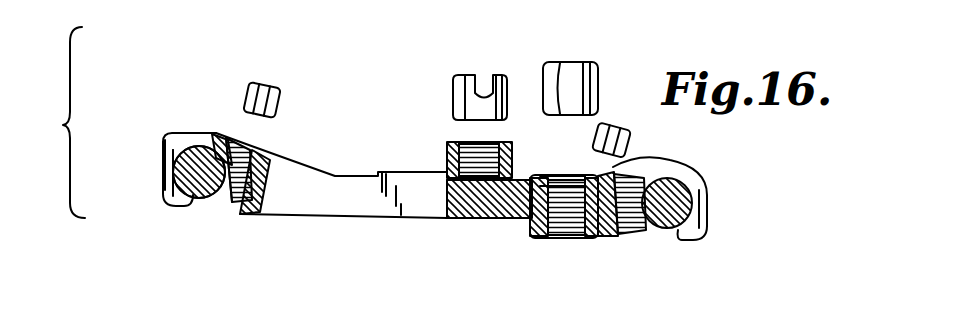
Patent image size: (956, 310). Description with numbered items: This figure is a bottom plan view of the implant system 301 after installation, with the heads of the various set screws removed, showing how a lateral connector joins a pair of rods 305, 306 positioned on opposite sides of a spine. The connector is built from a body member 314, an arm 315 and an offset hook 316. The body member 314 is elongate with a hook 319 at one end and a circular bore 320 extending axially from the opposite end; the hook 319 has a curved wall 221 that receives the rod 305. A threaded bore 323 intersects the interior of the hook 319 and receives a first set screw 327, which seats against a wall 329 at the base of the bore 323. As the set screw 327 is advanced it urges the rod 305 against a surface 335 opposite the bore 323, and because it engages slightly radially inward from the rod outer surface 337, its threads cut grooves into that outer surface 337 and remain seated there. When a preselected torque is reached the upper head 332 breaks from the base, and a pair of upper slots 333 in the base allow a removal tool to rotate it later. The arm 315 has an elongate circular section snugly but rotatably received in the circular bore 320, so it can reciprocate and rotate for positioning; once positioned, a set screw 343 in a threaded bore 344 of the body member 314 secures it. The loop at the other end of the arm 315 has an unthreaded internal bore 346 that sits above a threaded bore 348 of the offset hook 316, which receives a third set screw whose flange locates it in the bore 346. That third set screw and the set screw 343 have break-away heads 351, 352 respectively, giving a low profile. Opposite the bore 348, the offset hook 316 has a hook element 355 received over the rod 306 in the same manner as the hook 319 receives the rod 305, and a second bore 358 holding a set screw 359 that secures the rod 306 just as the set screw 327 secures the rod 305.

The implant system 301 is at (147, 98).
The rod 305 is at (189, 208).
The rod 306 is at (688, 190).
The body member 314 is at (296, 160).
The arm 315 is at (527, 197).
The offset hook 316 is at (704, 226).
The hook 319 is at (161, 170).
The circular bore 320 is at (452, 203).
The curved wall 221 is at (188, 183).
The bore 323 is at (262, 186).
The first set screw 327 is at (247, 150).
The wall 329 is at (232, 200).
The upper head 332 is at (263, 83).
The upper slots 333 is at (225, 133).
The surface 335 is at (194, 155).
The outer surface 337 is at (212, 133).
The set screw 343 is at (516, 153).
The threaded bore 344 is at (447, 147).
The internal bore 346 is at (537, 215).
The bore 348 is at (553, 232).
The head 351 is at (595, 63).
The head 352 is at (497, 78).
The hook element 355 is at (704, 210).
The second bore 358 is at (620, 238).
The set screw 359 is at (660, 210).